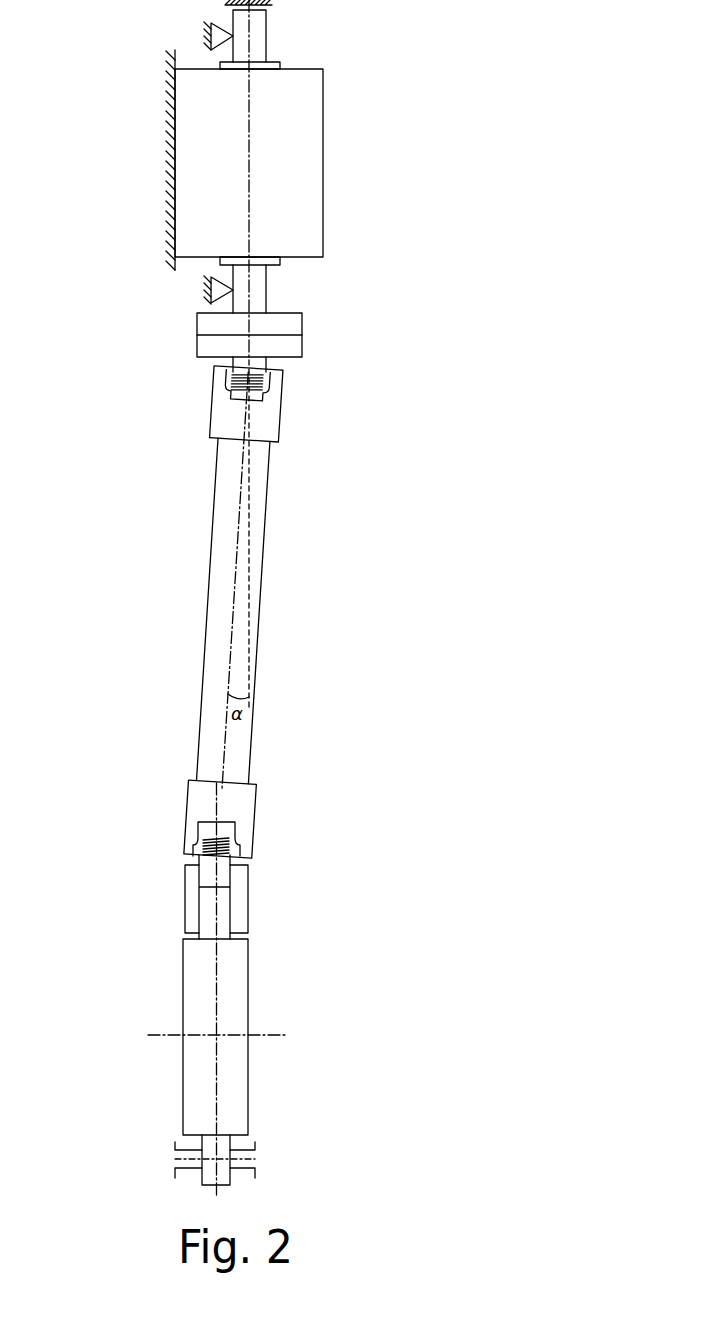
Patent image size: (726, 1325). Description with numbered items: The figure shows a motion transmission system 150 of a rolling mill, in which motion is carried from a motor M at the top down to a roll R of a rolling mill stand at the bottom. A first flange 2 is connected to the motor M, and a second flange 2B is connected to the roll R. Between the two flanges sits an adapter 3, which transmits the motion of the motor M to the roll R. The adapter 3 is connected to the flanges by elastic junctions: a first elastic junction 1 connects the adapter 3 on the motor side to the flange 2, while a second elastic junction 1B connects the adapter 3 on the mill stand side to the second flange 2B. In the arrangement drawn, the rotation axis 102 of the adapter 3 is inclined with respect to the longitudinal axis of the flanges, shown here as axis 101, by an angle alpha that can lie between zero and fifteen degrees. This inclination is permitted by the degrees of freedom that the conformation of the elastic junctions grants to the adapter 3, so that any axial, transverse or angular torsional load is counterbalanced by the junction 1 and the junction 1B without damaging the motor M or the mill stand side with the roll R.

The motor M is at (288, 157).
The flange 2 is at (286, 325).
The junction device 1 is at (232, 379).
The adapter 3 is at (269, 426).
The motor shaft axis 101 is at (250, 542).
The rotation axis 102 is at (228, 640).
The motion transmission system 150 is at (323, 602).
The second elastic junction 1B is at (197, 850).
The second flange 2B is at (233, 878).
The roll R is at (230, 1073).